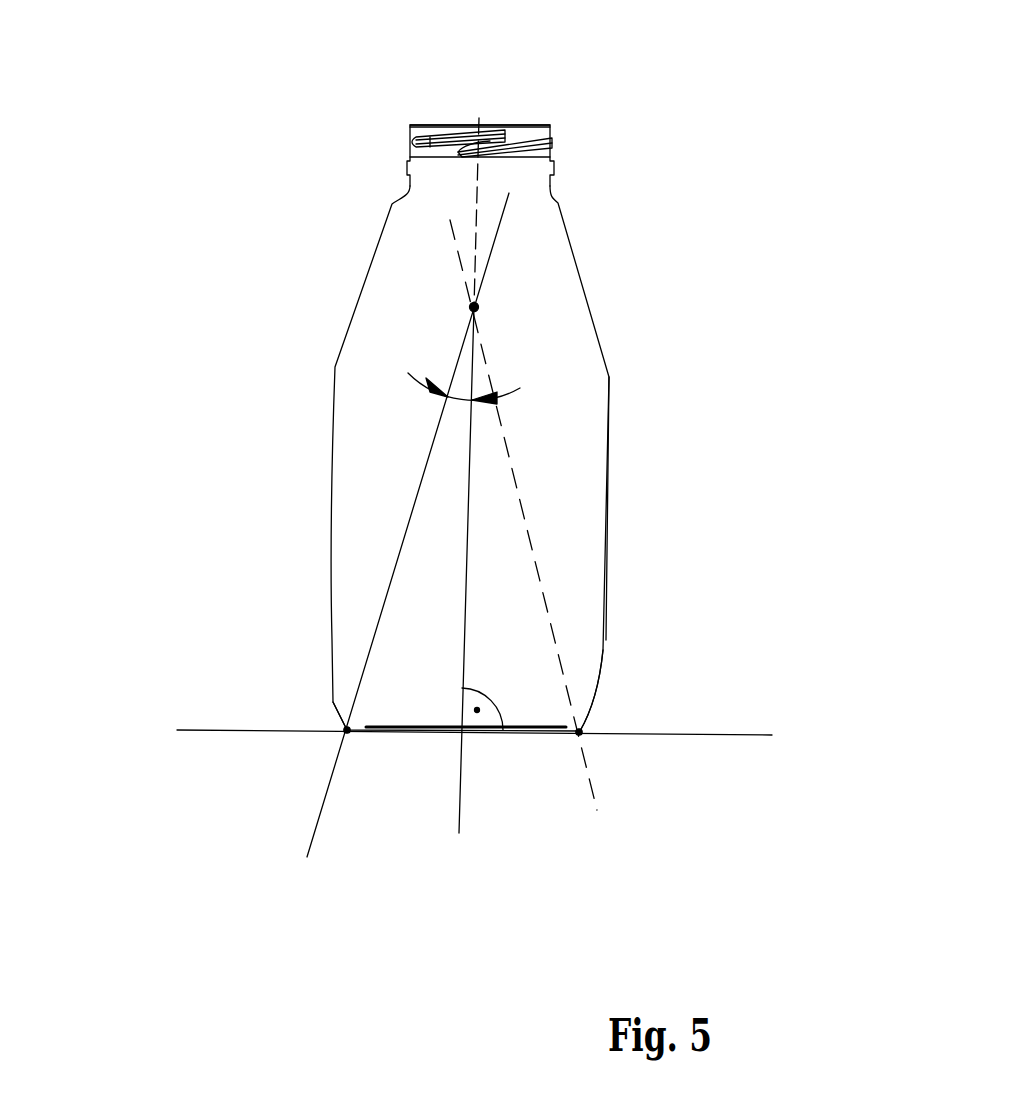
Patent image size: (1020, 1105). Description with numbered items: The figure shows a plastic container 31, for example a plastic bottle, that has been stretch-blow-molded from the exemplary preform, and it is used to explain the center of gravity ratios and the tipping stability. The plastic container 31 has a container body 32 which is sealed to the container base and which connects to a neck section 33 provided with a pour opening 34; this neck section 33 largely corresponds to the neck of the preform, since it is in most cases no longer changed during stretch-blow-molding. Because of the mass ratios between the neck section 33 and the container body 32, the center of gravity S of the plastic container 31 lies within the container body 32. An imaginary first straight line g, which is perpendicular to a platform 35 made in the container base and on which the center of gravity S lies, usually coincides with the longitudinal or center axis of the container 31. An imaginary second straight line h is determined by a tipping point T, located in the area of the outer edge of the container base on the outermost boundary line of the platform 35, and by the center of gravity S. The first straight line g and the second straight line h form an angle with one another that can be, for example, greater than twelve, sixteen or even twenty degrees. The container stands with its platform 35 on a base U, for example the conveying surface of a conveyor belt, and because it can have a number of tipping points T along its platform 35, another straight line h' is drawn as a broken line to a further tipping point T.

The plastic container 31 is at (226, 256).
The container body 32 is at (605, 563).
The neck section 33 is at (548, 135).
The pour opening 34 is at (522, 116).
The platform 35 is at (358, 735).
The center of gravity S is at (478, 307).
The first straight line g is at (462, 625).
The second straight line h is at (371, 525).
The another straight line h' is at (580, 515).
The base U is at (745, 734).
The tipping point T is at (185, 623).